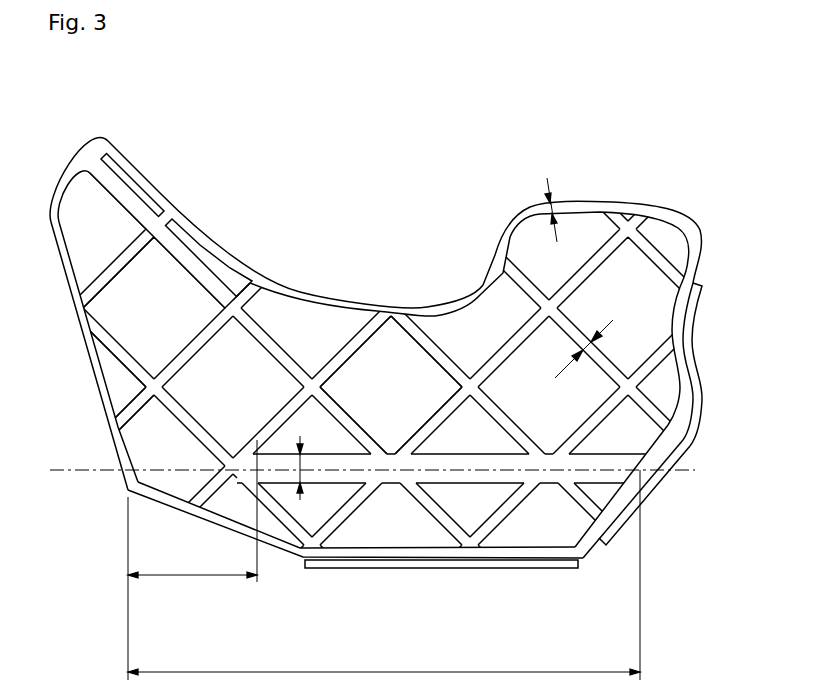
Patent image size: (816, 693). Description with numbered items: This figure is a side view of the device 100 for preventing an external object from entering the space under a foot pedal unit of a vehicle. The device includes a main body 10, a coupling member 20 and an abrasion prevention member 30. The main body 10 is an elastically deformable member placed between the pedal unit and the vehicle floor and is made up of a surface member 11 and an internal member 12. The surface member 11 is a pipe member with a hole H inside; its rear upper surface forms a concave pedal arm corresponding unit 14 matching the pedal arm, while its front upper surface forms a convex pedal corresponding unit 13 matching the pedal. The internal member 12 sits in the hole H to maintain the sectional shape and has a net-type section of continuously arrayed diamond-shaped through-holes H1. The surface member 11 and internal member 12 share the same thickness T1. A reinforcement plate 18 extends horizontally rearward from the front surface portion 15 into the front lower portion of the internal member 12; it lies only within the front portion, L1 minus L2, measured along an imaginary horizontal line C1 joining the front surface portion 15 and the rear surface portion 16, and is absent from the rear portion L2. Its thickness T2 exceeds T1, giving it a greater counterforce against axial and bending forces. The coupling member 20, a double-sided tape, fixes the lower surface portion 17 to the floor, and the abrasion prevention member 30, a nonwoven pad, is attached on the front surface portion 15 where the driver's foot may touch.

The device for preventing an external object from entering a space under a foot peda 100 is at (336, 150).
The main body 10 is at (190, 178).
The surface member 11 is at (312, 293).
The internal member 12 is at (510, 345).
The pedal corresponding unit 13 is at (602, 196).
The pedal arm corresponding unit 14 is at (213, 237).
The front surface portion 15 is at (703, 265).
The rear surface portion 16 is at (73, 320).
The lower surface portion 17 is at (288, 555).
The reinforcement plate 18 is at (465, 477).
The coupling member 20 is at (372, 570).
The abrasion prevention member 30 is at (683, 430).
The hole H is at (385, 355).
The through-holes H1 is at (200, 390).
The imaginary line C1 is at (85, 478).
The portion of front end portion (total length) L1 is at (384, 575).
The portion of rear end portion L2 is at (192, 560).
The thickness of surface member and internal member T1 is at (579, 275).
The thickness of reinforcement plate T2 is at (313, 464).